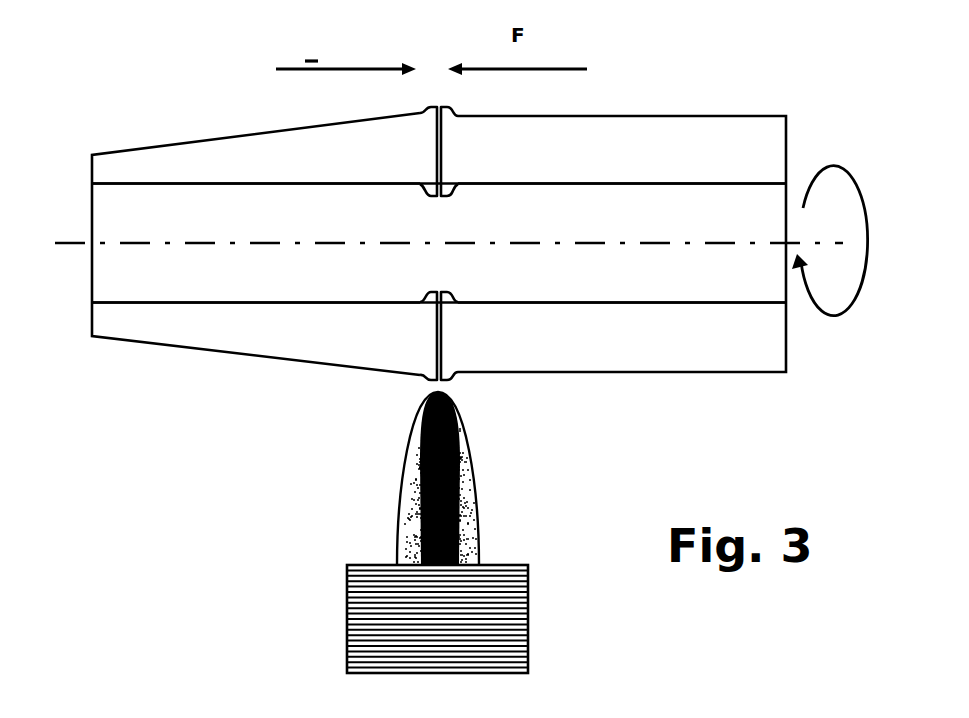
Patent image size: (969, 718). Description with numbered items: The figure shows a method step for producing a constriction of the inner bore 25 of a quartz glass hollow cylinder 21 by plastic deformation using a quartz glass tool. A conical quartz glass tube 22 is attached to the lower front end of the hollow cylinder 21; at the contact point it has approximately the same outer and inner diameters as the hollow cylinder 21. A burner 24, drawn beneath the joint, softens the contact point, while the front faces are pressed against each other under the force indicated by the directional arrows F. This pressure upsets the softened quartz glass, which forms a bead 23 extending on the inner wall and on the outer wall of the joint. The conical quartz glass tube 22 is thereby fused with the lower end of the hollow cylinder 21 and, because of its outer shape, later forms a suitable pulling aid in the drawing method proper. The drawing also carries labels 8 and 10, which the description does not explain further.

The rotation direction of the tube 8 is at (833, 160).
The tube (workpiece) axis 10 is at (208, 245).
The hollow cylinder 21 is at (663, 150).
The conical quartz glass tube 22 is at (136, 165).
The bead 23 is at (428, 150).
The burner 24 is at (425, 505).
The inner bore 25 is at (742, 226).